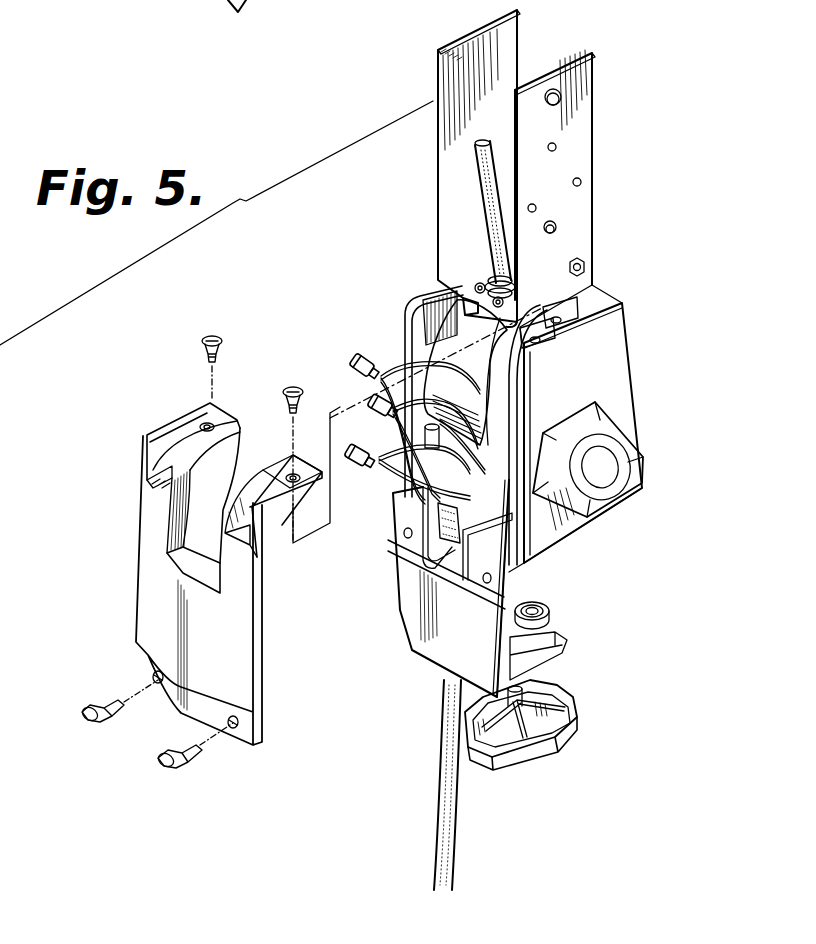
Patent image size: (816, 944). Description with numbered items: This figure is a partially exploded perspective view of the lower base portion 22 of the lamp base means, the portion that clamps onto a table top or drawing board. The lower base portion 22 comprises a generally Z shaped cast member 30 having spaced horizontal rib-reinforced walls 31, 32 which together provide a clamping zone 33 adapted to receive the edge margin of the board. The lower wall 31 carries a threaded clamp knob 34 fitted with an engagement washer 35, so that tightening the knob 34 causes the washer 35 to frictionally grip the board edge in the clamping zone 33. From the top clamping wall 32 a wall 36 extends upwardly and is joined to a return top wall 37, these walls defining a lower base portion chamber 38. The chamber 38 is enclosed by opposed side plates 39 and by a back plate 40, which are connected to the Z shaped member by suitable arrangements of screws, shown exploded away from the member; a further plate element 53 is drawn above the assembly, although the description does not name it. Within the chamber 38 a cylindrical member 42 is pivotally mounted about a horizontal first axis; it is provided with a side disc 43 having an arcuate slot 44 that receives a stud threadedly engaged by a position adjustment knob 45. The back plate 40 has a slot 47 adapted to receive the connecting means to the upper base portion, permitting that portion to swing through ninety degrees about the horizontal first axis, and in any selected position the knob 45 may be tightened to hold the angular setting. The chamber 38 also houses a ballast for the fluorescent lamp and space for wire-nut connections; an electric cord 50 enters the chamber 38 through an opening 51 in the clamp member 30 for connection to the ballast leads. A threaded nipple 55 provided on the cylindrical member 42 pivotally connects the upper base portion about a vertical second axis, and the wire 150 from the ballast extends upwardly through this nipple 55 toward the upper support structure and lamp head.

The lower base portion 22 is at (655, 272).
The Z shaped cast member 30 is at (430, 650).
The horizontal rib-reinforced wall 31 is at (555, 657).
The top clamping wall 32 is at (593, 533).
The clamping zone 33 is at (543, 578).
The threaded clamp knob 34 is at (540, 757).
The engagement washer 35 is at (550, 613).
The wall 36 is at (623, 305).
The return top wall 37 is at (597, 293).
The lower base portion chamber 38 is at (433, 310).
The side plates 39 is at (403, 315).
The back plate 40 is at (152, 614).
The cylindrical member 42 is at (450, 363).
The side disc 43 is at (507, 403).
The arcuate slot 44 is at (530, 440).
The position adjustment knob 45 is at (633, 458).
The slot 47 is at (193, 470).
The electric cord 50 is at (438, 852).
The opening 51 is at (438, 560).
The tall plate 53 is at (502, 67).
The threaded nipple 55 is at (490, 268).
The wire 150 is at (490, 157).